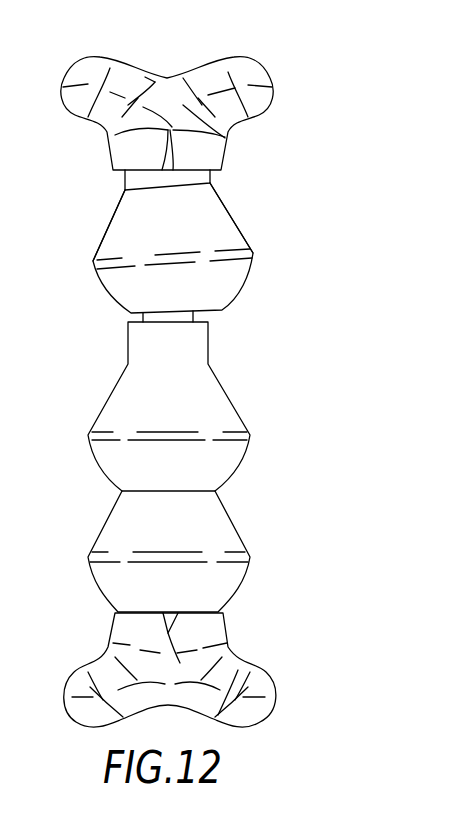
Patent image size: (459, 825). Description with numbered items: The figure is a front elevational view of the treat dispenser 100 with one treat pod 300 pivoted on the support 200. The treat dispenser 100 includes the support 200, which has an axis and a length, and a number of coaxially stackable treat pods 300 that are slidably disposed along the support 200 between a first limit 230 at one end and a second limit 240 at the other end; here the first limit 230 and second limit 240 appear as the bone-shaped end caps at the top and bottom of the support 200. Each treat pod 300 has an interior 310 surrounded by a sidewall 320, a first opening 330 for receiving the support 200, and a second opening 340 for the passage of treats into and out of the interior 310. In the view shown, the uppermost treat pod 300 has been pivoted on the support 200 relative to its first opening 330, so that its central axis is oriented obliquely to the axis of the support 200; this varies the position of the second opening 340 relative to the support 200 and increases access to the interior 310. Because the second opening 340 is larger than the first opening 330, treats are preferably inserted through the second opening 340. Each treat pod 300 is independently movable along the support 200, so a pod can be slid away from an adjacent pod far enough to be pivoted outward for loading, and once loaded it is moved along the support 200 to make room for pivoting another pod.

The treat dispenser 100 is at (297, 107).
The support 200 is at (178, 318).
The treat pod 300 is at (216, 212).
The first limit 230 is at (257, 66).
The second limit 240 is at (270, 683).
The interior 310 is at (114, 238).
The sidewall 320 is at (243, 228).
The first opening 330 is at (126, 183).
The second opening 340 is at (214, 311).